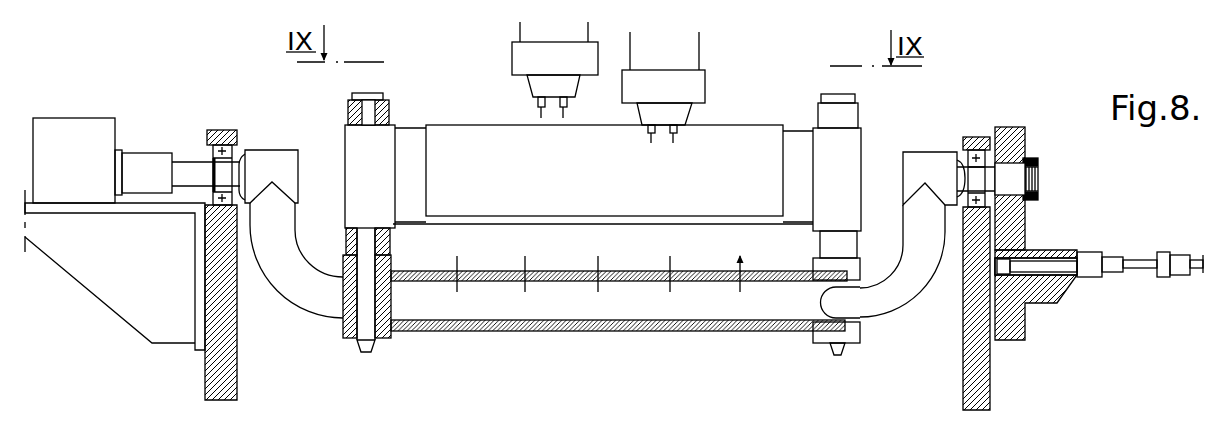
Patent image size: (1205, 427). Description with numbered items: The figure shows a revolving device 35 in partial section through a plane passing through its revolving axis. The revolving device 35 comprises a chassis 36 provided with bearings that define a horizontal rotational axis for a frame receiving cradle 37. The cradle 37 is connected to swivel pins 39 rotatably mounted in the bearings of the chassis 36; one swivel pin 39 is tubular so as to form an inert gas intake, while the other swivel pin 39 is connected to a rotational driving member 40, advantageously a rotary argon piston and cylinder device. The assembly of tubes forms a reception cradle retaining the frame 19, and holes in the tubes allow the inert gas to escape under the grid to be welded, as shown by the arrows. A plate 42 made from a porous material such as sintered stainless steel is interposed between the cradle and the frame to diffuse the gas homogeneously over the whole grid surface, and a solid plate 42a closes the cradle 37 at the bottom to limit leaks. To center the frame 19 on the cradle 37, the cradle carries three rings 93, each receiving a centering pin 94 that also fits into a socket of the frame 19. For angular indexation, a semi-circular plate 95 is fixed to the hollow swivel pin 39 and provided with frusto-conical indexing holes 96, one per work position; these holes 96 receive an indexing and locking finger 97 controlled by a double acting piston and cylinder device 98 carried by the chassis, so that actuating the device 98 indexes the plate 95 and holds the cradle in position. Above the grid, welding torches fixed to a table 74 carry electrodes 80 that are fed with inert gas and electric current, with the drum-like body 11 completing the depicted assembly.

The drying cylinder 11 is at (482, 123).
The frame 19 is at (343, 140).
The revolving device 35 is at (240, 80).
The chassis 36 is at (222, 373).
The frame receiving cradle 37 is at (300, 313).
The swivel pins 39 is at (221, 170).
The rotational driving member 40 is at (88, 164).
The porous plate 42 is at (547, 282).
The solid plate 42a is at (718, 333).
The table 74 is at (566, 70).
The electrode 80 is at (542, 116).
The rings 93 is at (347, 339).
The centering pin 94 is at (369, 110).
The semi-circular plate 95 is at (1012, 226).
The indexing holes 96 is at (1028, 268).
The indexing and locking finger 97 is at (1050, 263).
The double acting piston and cylinder device 98 is at (1182, 268).